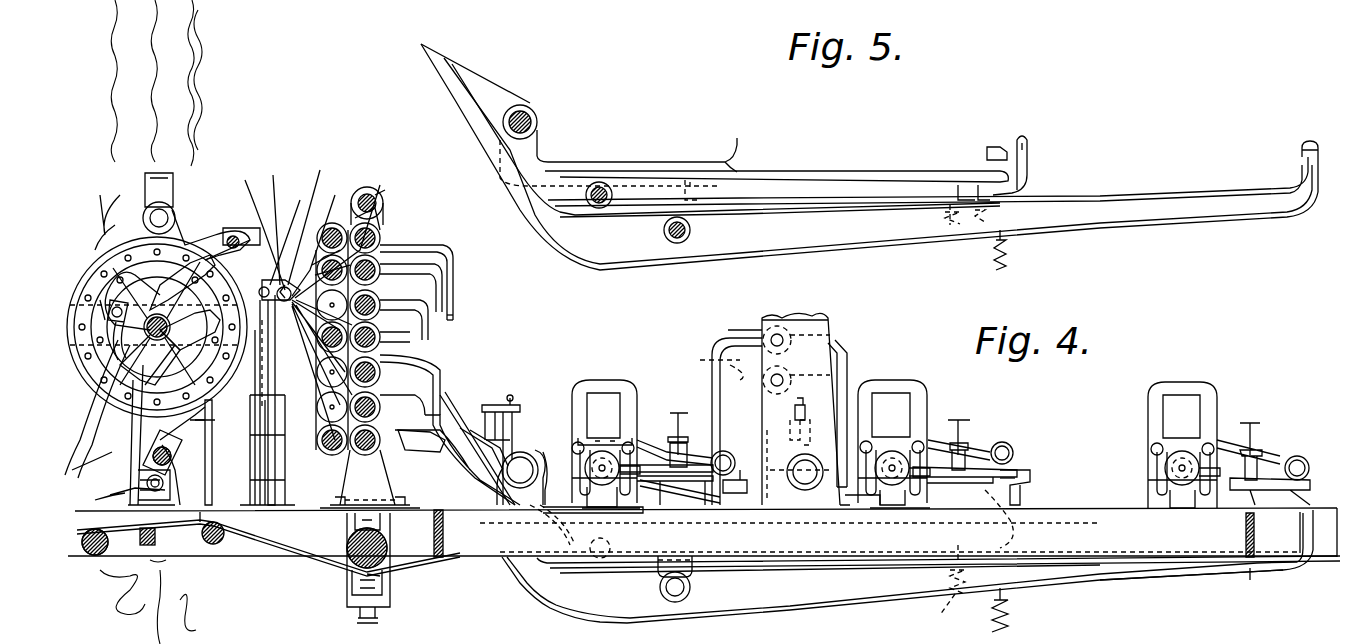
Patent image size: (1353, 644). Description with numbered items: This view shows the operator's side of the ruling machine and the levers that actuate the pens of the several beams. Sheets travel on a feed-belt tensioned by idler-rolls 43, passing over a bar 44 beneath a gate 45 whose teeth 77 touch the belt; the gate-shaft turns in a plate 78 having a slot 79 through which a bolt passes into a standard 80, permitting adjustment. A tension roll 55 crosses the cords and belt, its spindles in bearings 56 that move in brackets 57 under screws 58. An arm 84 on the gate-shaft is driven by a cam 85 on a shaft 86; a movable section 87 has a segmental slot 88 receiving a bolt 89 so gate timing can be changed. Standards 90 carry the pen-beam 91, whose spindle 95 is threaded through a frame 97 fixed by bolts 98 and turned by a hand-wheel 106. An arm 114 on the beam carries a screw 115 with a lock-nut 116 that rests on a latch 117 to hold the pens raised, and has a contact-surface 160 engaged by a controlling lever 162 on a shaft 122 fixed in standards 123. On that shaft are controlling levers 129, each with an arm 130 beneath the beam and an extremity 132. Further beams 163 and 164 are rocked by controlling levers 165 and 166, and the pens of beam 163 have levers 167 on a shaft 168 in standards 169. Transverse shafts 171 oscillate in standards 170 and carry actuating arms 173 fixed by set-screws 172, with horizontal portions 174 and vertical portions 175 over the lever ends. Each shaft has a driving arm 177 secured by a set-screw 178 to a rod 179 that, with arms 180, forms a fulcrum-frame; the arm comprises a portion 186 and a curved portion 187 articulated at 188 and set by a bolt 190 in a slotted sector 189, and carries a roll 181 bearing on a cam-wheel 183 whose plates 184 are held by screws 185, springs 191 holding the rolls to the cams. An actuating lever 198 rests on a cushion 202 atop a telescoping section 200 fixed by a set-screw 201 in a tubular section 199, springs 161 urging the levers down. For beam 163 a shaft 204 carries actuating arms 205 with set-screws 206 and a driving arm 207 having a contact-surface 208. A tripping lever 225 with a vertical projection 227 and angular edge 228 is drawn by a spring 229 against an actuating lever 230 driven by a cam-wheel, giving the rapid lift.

In FIG. 4, the idler-rolls 43 is at (215, 545).
In FIG. 4, the bar 44 is at (155, 537).
In FIG. 4, the gate 45 is at (155, 440).
In FIG. 4, the roll 55 is at (383, 577).
In FIG. 4, the bearings 56 is at (350, 532).
In FIG. 4, the brackets 57 is at (352, 588).
In FIG. 4, the screws 58 is at (380, 620).
In FIG. 4, the teeth 77 is at (200, 525).
In FIG. 4, the plate or support 78 is at (260, 460).
In FIG. 4, the slot 79 is at (110, 490).
In FIG. 4, the standard 80 is at (92, 552).
In FIG. 4, the arm 84 is at (175, 375).
In FIG. 4, the cam or driving member 85 is at (145, 282).
In FIG. 4, the shaft 86 is at (120, 410).
In FIG. 4, the movable cam section 87 is at (100, 445).
In FIG. 4, the segmental slot 88 is at (115, 300).
In FIG. 4, the bolt 89 is at (131, 301).
In FIG. 4, the standards 90 is at (605, 375).
In FIG. 4, the transverse bar or beam 91 is at (690, 505).
In FIG. 4, the spindle 95 is at (585, 500).
In FIG. 4, the frames 97 is at (575, 440).
In FIG. 4, the bolts 98 is at (585, 447).
In FIG. 4, the hand-wheel 106 is at (604, 480).
In FIG. 4, the arm 114 is at (1015, 454).
In FIG. 4, the screw 115 is at (965, 440).
In FIG. 4, the lock-nut 116 is at (953, 448).
In FIG. 4, the latch 117 is at (972, 468).
In FIG. 4, the shaft or like support 122 is at (515, 478).
In FIG. 4, the standards 123 is at (523, 540).
In FIG. 4, the lifting or controlling levers 129 is at (540, 440).
In FIG. 4, the arm 130 is at (670, 520).
In FIG. 4, the extremity 132 is at (450, 600).
In FIG. 4, the contact-surface 160 is at (738, 510).
In FIG. 5, the springs 161 is at (1020, 214).
In FIG. 4, the springs 161 is at (1012, 625).
In FIG. 5, the special controlling lever 162 is at (740, 160).
In FIG. 4, the special controlling lever 162 is at (1040, 560).
In FIG. 4, the beam 163 is at (990, 505).
In FIG. 4, the beam 164 is at (1270, 468).
In FIG. 5, the controlling lever 165 is at (1085, 183).
In FIG. 5, the controlling lever 166 is at (1302, 156).
In FIG. 4, the controlling lever 166 is at (1238, 590).
In FIG. 4, the controlling levers 167 is at (1020, 530).
In FIG. 4, the shaft 168 is at (806, 490).
In FIG. 4, the standards 169 is at (832, 318).
In FIG. 4, the standards 170 is at (445, 455).
In FIG. 4, the transverse shafts or supports 171 is at (382, 268).
In FIG. 4, the set-screws 172 is at (385, 210).
In FIG. 4, the actuating arms 173 is at (475, 258).
In FIG. 4, the horizontal portions 174 is at (450, 235).
In FIG. 4, the vertical portions 175 is at (470, 298).
In FIG. 4, the driving arm 177 is at (292, 239).
In FIG. 4, the set-screw 178 is at (326, 231).
In FIG. 4, the rod 179 is at (346, 227).
In FIG. 4, the arms 180 is at (365, 480).
In FIG. 4, the anti-friction roll 181 is at (165, 185).
In FIG. 4, the wheel 183 is at (190, 240).
In FIG. 4, the plates 184 is at (95, 395).
In FIG. 4, the screws 185 is at (189, 219).
In FIG. 4, the portion 186 is at (300, 420).
In FIG. 4, the curved portion 187 is at (200, 285).
In FIG. 4, the articulation 188 is at (280, 217).
In FIG. 4, the slotted sector 189 is at (315, 213).
In FIG. 4, the bolt 190 is at (382, 303).
In FIG. 4, the spiral springs 191 is at (200, 450).
In FIG. 4, the actuating lever 198 is at (462, 385).
In FIG. 4, the lower tubular sections 199 is at (250, 525).
In FIG. 4, the upper telescoping sections 200 is at (170, 360).
In FIG. 4, the set-screws 201 is at (390, 337).
In FIG. 4, the cushion 202 is at (194, 320).
In FIG. 4, the shaft 204 is at (782, 345).
In FIG. 4, the actuating arms 205 is at (735, 338).
In FIG. 4, the set-screws 206 is at (770, 330).
In FIG. 4, the driving arms 207 is at (865, 365).
In FIG. 4, the contact-surface 208 is at (858, 510).
In FIG. 5, the lever 225 is at (915, 145).
In FIG. 5, the vertical projection 227 is at (990, 152).
In FIG. 5, the angular edge 228 is at (1000, 148).
In FIG. 5, the spring 229 is at (939, 219).
In FIG. 4, the spring 229 is at (937, 592).
In FIG. 4, the actuating lever 230 is at (445, 370).